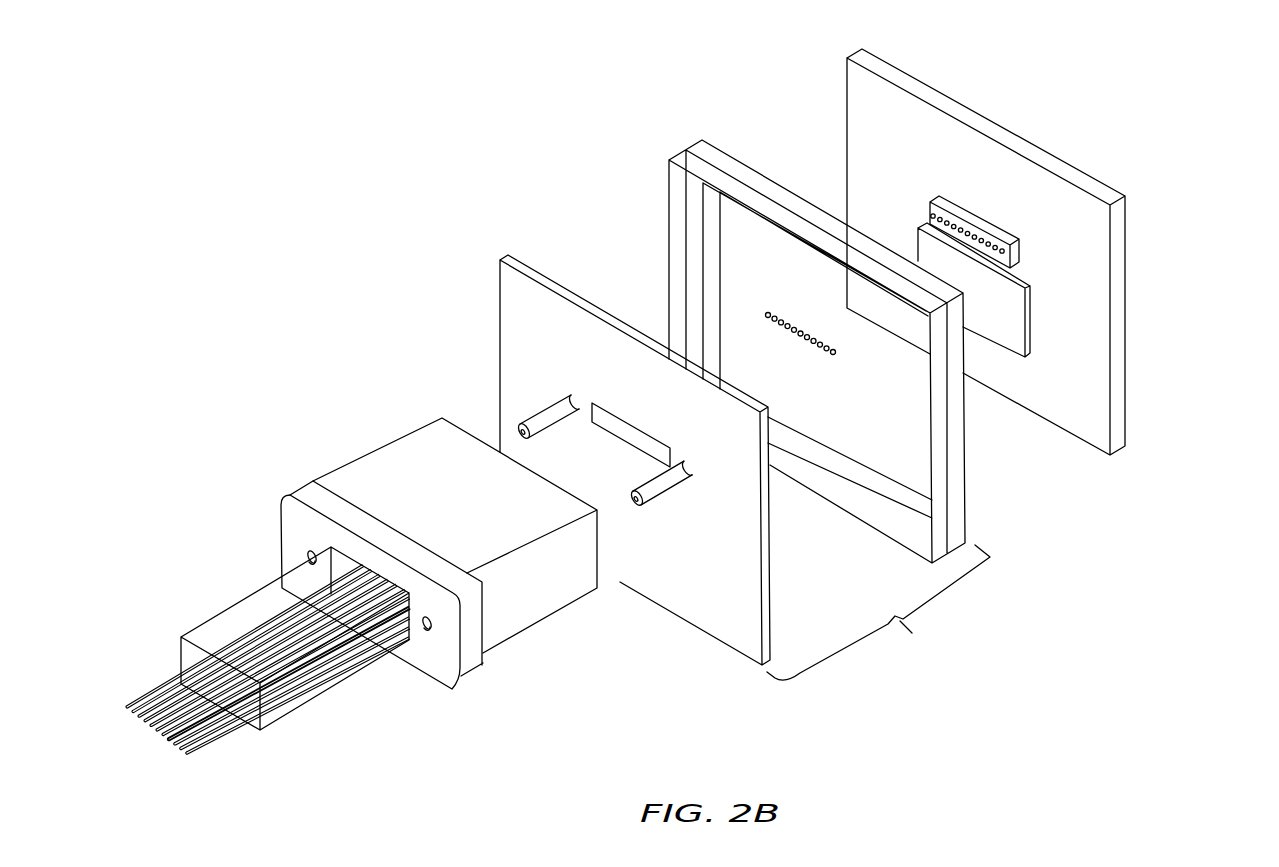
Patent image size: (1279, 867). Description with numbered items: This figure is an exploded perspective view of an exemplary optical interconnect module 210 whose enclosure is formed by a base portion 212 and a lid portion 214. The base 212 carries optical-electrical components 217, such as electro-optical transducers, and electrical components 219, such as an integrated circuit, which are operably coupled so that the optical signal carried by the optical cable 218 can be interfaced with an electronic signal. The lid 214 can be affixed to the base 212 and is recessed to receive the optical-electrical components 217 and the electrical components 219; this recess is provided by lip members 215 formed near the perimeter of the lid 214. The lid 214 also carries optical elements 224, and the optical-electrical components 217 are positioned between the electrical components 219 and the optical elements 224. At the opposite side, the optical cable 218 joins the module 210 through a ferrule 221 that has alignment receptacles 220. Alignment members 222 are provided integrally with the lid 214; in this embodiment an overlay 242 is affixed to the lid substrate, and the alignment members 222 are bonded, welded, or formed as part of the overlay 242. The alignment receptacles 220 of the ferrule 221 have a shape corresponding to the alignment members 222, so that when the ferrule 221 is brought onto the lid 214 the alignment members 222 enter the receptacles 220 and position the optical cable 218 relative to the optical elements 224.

The optical interconnect module 210 is at (1178, 393).
The base portion 212 is at (1118, 243).
The lid portion 214 is at (878, 612).
The lip members 215 is at (958, 514).
The optical-electrical components 217 is at (987, 228).
The electrical components 219 is at (1015, 327).
The optical cable 218 is at (327, 685).
The alignment receptacles 220 is at (430, 631).
The ferrule 221 is at (512, 612).
The alignment members 222 is at (525, 422).
The optical elements 224 is at (834, 355).
The overlay 242 is at (750, 642).